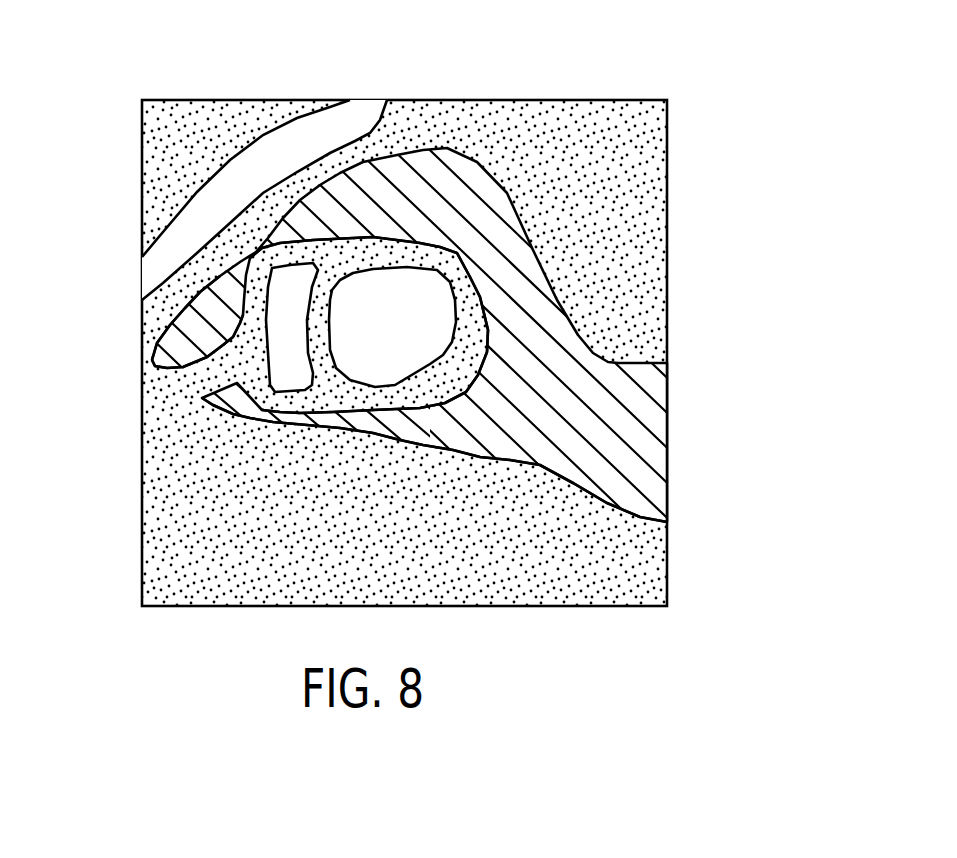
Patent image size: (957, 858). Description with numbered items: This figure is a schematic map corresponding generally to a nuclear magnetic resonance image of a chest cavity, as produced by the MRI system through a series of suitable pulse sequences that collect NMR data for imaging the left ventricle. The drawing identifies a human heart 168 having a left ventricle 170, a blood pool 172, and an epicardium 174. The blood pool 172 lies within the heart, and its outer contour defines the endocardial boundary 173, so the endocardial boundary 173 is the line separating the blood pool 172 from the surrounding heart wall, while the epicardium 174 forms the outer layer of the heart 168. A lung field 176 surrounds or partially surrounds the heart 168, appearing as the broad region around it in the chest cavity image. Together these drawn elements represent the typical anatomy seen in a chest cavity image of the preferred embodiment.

The human heart 168 is at (168, 317).
The left ventricle 170 is at (388, 231).
The blood pool 172 is at (668, 335).
The endocardial boundary 173 is at (409, 281).
The epicardium 174 is at (434, 532).
The lung field 176 is at (454, 355).